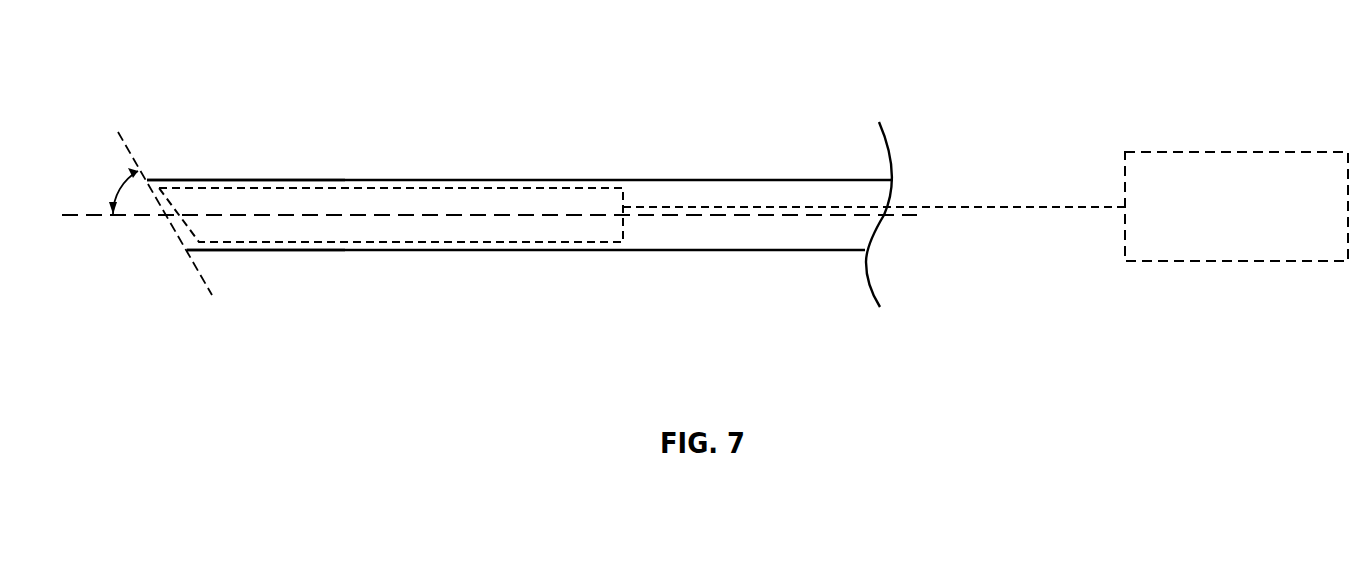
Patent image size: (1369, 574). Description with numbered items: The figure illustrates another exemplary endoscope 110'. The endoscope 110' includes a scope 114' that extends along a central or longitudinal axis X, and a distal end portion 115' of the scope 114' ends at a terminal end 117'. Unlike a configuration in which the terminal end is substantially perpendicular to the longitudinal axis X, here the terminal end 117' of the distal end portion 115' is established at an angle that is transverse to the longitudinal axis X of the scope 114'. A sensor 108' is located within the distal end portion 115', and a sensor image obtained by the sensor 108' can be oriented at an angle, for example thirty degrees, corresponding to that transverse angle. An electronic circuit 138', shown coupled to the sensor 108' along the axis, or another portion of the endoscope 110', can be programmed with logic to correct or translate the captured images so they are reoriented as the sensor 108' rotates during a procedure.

The endoscope 110' is at (616, 169).
The scope 114' is at (520, 207).
The distal end portion 115' is at (268, 180).
The terminal end 117' is at (159, 213).
The sensor 108' is at (642, 179).
The longitudinal axis X is at (87, 217).
The electronic circuit 138' is at (1236, 171).